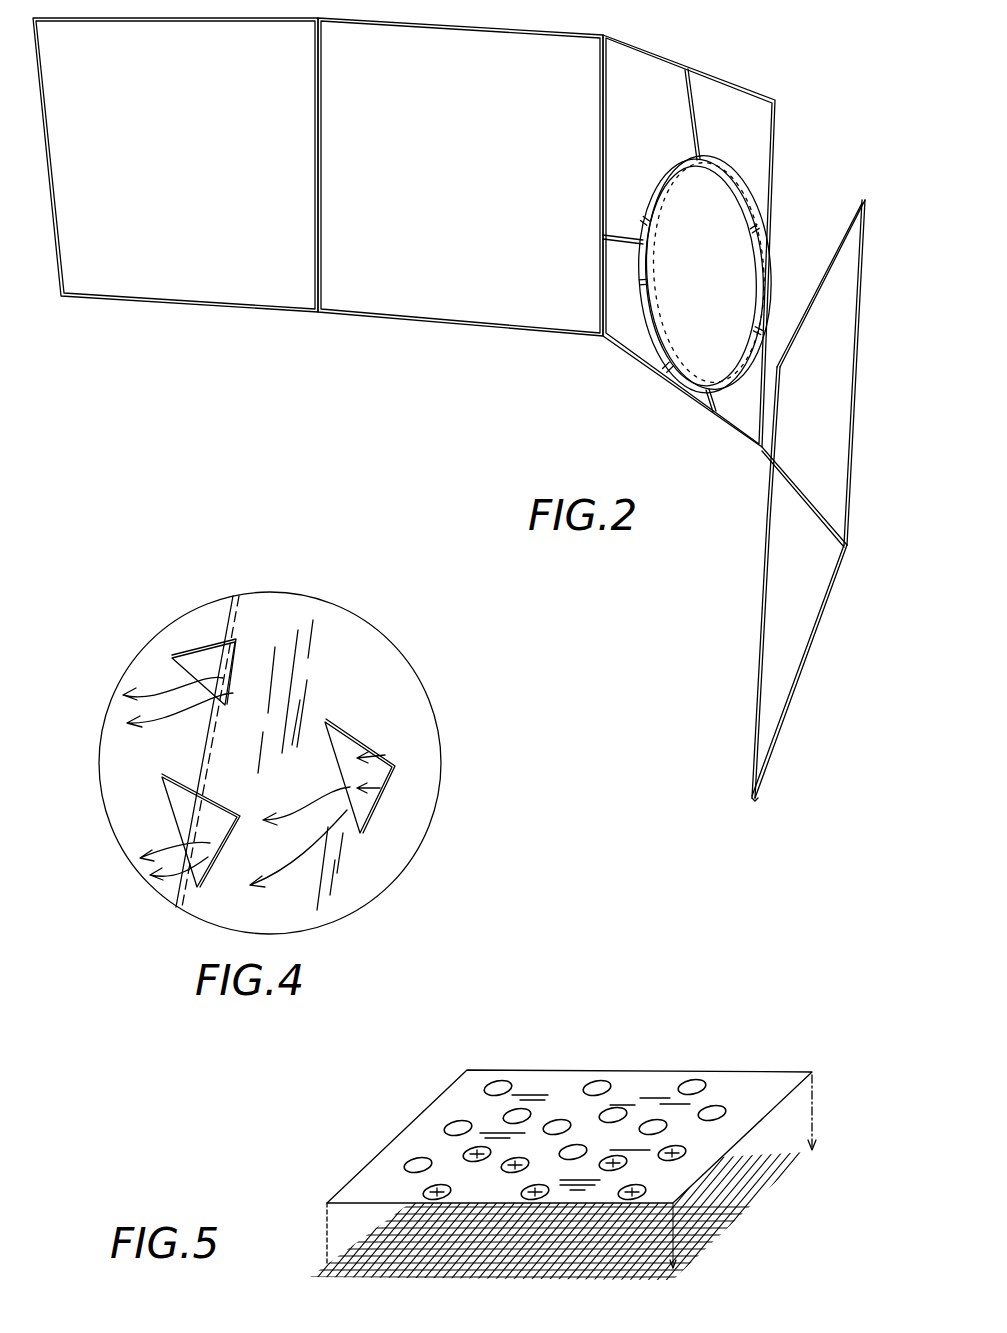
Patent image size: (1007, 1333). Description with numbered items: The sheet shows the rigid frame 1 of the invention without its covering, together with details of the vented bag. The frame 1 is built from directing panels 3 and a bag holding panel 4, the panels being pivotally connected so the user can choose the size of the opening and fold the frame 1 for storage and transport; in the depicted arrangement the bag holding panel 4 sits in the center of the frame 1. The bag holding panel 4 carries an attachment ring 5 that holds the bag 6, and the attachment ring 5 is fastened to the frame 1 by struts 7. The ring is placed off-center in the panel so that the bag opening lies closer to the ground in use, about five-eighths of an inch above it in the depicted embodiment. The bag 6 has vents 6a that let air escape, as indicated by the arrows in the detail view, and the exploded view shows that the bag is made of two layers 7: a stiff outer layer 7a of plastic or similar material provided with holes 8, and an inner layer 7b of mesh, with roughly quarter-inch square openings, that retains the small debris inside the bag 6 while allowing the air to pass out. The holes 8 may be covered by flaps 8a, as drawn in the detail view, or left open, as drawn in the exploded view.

In FIG. 2, the frame 1 is at (490, 385).
In FIG. 2, the directing panels 3 is at (393, 322).
In FIG. 2, the bag holding panel 4 is at (735, 72).
In FIG. 2, the attachment ring 5 is at (660, 360).
In FIG. 4, the bag 6 is at (340, 647).
In FIG. 4, the vents 6a is at (223, 678).
In FIG. 2, the struts / layers 7 is at (690, 130).
In FIG. 5, the struts / layers 7 is at (570, 1163).
In FIG. 5, the outer layer 7a is at (410, 1125).
In FIG. 5, the inner layer 7b is at (350, 1243).
In FIG. 5, the holes 8 is at (712, 1113).
In FIG. 4, the flaps 8a is at (235, 643).